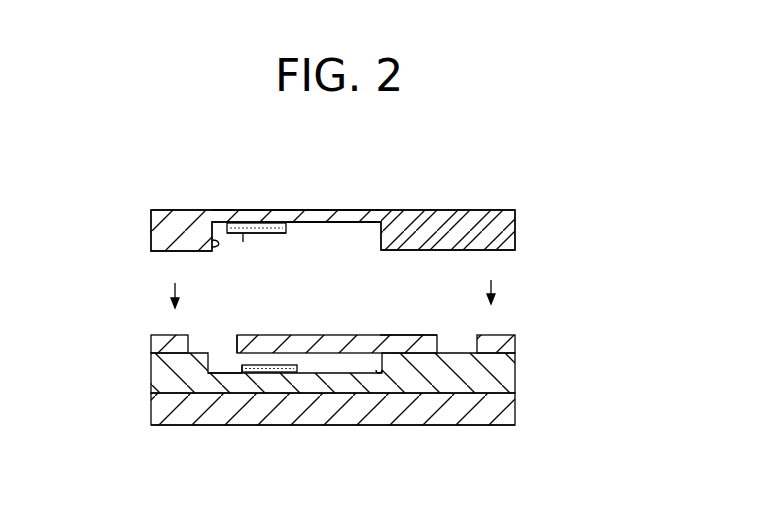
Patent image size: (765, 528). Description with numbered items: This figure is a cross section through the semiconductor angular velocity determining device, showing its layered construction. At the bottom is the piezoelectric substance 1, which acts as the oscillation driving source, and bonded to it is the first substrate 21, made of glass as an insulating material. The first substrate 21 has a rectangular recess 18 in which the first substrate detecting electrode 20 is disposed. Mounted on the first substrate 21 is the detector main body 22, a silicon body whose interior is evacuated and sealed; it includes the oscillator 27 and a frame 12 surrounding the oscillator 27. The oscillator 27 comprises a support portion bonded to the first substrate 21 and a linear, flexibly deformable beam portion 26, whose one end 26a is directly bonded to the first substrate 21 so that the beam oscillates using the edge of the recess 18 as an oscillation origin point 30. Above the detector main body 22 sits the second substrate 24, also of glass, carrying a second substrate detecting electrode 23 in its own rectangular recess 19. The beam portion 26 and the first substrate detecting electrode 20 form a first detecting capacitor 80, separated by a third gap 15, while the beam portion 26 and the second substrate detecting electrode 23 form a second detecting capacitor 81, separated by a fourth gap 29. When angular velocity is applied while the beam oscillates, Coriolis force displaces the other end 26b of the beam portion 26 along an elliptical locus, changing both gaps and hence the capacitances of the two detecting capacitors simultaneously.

The piezoelectric substance 1 is at (489, 404).
The frame 12 is at (151, 346).
The third gap 15 is at (248, 373).
The rectangular recess 18 is at (379, 370).
The rectangular recess 19 is at (212, 247).
The first substrate detecting electrode 20 is at (288, 372).
The first substrate 21 is at (437, 388).
The detector main body 22 is at (517, 338).
The second substrate detecting electrode 23 is at (313, 223).
The second substrate 24 is at (516, 222).
The beam portion 26 is at (368, 333).
The one end of the beam portion 26a is at (427, 333).
The other end of the beam portion 26b is at (237, 345).
The oscillator 27 is at (280, 234).
The fourth gap 29 is at (314, 212).
The oscillation origin point 30 is at (382, 356).
The first detecting capacitor 80 is at (240, 360).
The second detecting capacitor 81 is at (240, 222).